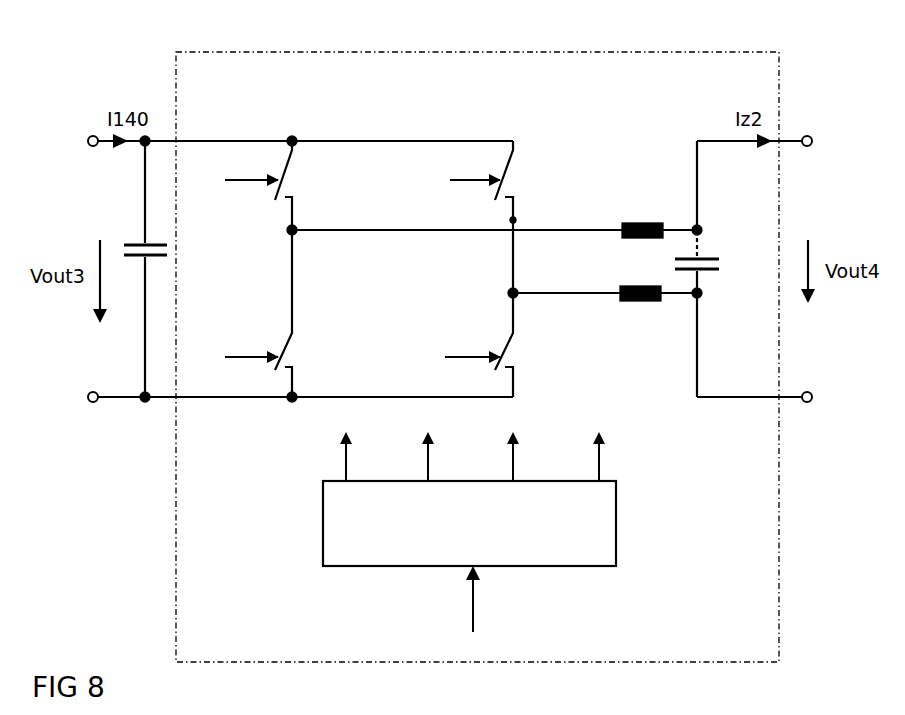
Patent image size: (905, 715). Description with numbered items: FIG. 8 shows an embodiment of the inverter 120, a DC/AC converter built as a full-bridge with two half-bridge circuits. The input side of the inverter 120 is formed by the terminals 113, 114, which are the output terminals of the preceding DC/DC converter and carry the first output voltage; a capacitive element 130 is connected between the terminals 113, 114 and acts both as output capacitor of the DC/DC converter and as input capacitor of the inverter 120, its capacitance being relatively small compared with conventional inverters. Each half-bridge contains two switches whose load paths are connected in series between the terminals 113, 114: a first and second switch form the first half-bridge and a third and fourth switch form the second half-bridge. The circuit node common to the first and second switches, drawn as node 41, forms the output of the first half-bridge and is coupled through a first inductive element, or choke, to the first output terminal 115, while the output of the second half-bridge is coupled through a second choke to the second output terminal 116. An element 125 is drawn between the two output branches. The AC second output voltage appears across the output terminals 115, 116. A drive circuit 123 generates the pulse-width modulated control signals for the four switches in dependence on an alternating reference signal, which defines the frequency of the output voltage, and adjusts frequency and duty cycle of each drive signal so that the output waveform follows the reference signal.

The inverter 120 is at (456, 52).
The output terminal 113 is at (93, 130).
The output terminal 114 is at (92, 404).
The output terminal 115 is at (811, 134).
The output terminal 116 is at (811, 403).
The capacitive element 130 is at (130, 235).
The node 41 is at (264, 232).
The output capacitor 125 is at (662, 262).
The drive circuit 123 is at (323, 528).